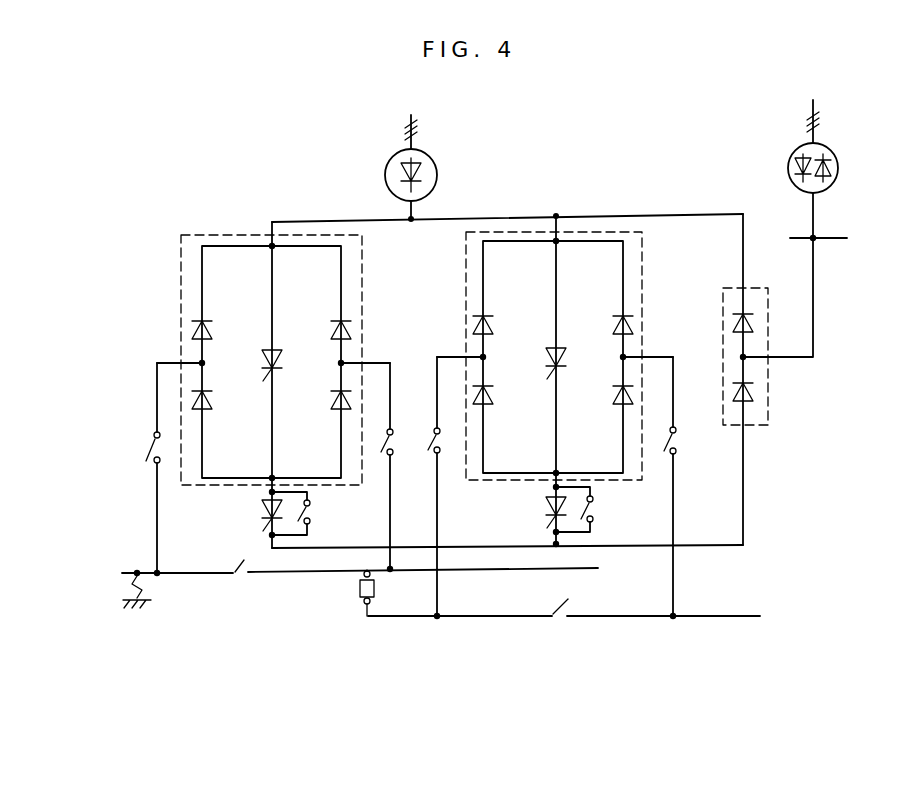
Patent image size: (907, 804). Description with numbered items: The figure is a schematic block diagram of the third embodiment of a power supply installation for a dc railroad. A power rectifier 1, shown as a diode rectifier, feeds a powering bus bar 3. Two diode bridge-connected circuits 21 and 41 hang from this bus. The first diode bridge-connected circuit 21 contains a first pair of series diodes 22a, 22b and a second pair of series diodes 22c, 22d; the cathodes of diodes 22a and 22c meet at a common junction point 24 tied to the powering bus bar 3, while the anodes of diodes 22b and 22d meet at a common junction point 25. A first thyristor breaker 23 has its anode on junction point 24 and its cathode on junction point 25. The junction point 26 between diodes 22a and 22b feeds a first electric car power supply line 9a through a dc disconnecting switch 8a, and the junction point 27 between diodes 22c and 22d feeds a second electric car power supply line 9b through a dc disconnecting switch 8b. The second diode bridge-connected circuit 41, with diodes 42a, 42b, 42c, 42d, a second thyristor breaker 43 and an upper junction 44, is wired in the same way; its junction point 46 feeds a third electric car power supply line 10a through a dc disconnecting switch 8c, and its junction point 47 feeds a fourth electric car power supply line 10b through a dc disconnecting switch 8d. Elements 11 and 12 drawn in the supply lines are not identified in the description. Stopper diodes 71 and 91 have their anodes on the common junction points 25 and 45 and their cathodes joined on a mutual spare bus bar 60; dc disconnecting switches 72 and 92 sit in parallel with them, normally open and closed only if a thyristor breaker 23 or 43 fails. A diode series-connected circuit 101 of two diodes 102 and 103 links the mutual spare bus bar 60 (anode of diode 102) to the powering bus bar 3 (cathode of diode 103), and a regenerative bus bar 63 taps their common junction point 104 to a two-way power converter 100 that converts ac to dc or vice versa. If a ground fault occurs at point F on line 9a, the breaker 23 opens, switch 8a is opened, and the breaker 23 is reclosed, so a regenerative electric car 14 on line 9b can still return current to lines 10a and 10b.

The power rectifier 1 is at (432, 160).
The powering bus bar 3 is at (462, 219).
The first diode bridge-connected circuit 21 is at (204, 234).
The diode 22a is at (208, 330).
The diode 22b is at (210, 400).
The diode 22c is at (337, 324).
The diode 22d is at (331, 400).
The first thyristor breaker 23 is at (278, 352).
The common junction point 24 is at (270, 248).
The common junction point 25 is at (276, 478).
The junction point 26 is at (205, 365).
The junction point 27 is at (339, 365).
The stopper diode 71 is at (262, 512).
The dc disconnecting switch 72 is at (313, 512).
The dc disconnecting switch 8a is at (152, 450).
The dc disconnecting switch 8b is at (394, 440).
The dc disconnecting switch 8c is at (430, 446).
The dc disconnecting switch 8d is at (677, 442).
The second diode bridge-connected circuit 41 is at (608, 232).
The diode 42a is at (490, 325).
The diode 42b is at (491, 397).
The diode 42c is at (620, 320).
The diode 42d is at (614, 395).
The second thyristor breaker 43 is at (562, 350).
The junction 44 is at (553, 244).
The common junction point 45 is at (559, 473).
The junction point 46 is at (487, 362).
The junction point 47 is at (620, 362).
The stopper diode 91 is at (545, 512).
The dc disconnecting switch 92 is at (598, 512).
The mutual spare bus bar 60 is at (462, 546).
The two-way power converter 100 is at (838, 166).
The diode series-connected circuit 101 is at (752, 287).
The diode 102 is at (752, 392).
The diode 103 is at (752, 322).
The common junction point 104 is at (748, 358).
The regenerative bus bar 63 is at (822, 238).
The ground fault point F is at (141, 577).
The first electric car power supply line 9a is at (190, 576).
The second electric car power supply line 9b is at (312, 574).
The third electric car power supply line 10a is at (486, 618).
The fourth electric car power supply line 10b is at (634, 618).
The switch 11 is at (240, 578).
The switch 12 is at (568, 606).
The regenerative electric car 14 is at (376, 588).